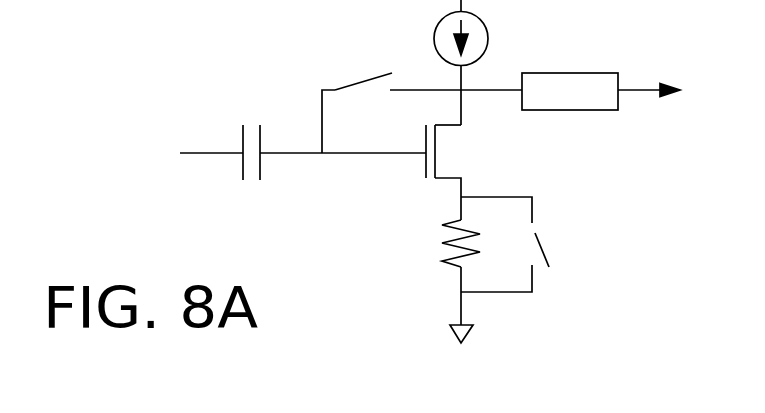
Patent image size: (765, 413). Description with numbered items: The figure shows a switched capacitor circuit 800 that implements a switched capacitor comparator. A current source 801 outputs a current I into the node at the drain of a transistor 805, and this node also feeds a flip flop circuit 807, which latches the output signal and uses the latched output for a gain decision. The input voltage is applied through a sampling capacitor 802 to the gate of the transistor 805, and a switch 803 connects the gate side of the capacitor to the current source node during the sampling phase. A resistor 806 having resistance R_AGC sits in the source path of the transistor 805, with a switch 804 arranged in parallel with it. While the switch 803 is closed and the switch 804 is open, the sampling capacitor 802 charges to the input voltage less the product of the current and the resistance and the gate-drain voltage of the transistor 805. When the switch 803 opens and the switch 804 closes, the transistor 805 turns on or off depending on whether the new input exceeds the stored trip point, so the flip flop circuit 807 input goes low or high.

The switched capacitor circuit 800 is at (157, 88).
The current source 801 is at (488, 30).
The sampling capacitor 802 is at (262, 130).
The switch 803 is at (360, 80).
The switch 804 is at (537, 237).
The transistor 805 is at (452, 153).
The resistor 806 is at (448, 245).
The flip flop circuit 807 is at (573, 110).